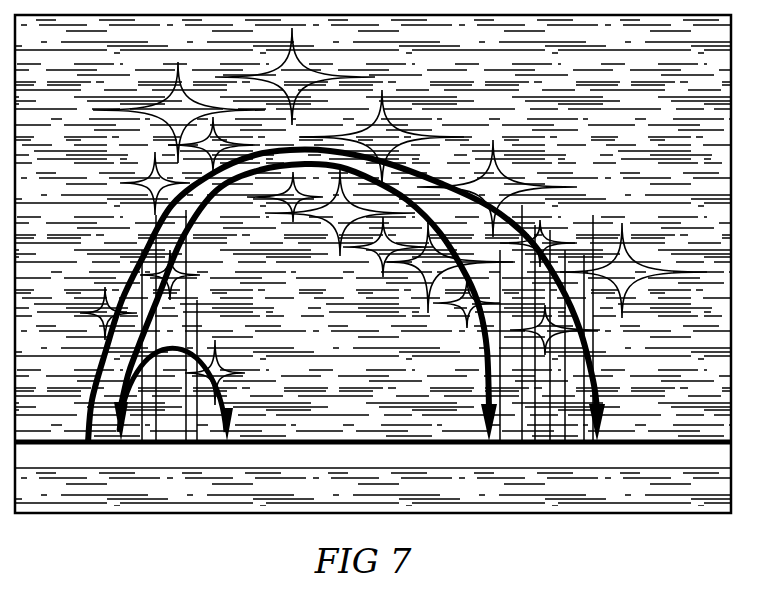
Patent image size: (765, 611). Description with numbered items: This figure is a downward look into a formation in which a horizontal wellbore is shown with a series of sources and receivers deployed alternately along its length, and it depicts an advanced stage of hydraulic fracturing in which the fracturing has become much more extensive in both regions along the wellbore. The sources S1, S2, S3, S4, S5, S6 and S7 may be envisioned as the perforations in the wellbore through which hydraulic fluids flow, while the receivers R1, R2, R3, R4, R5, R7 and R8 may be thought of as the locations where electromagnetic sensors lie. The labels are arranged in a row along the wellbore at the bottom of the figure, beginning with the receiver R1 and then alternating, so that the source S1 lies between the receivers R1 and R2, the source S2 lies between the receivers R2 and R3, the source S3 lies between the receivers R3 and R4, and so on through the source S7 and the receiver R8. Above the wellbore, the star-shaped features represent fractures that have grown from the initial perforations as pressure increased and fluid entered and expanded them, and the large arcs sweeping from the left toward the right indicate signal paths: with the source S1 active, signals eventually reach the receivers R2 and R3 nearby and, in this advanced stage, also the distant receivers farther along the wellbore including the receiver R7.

The receiver R1 is at (37, 455).
The source S1 is at (83, 455).
The receiver R2 is at (130, 455).
The source S2 is at (177, 455).
The receiver R3 is at (223, 455).
The source S3 is at (270, 455).
The receiver R4 is at (317, 455).
The source S4 is at (364, 455).
The receiver R5 is at (457, 455).
The source S5 is at (457, 455).
The source S6 is at (551, 455).
The receiver R7 is at (597, 455).
The source S7 is at (644, 455).
The receiver R8 is at (699, 455).